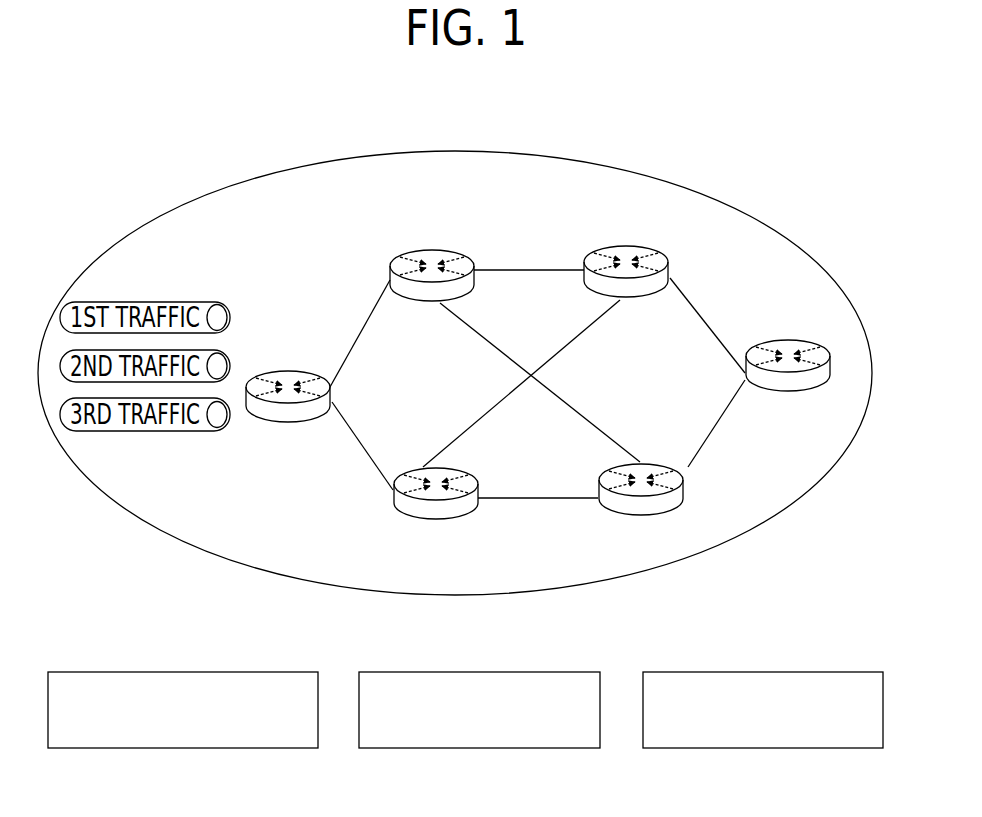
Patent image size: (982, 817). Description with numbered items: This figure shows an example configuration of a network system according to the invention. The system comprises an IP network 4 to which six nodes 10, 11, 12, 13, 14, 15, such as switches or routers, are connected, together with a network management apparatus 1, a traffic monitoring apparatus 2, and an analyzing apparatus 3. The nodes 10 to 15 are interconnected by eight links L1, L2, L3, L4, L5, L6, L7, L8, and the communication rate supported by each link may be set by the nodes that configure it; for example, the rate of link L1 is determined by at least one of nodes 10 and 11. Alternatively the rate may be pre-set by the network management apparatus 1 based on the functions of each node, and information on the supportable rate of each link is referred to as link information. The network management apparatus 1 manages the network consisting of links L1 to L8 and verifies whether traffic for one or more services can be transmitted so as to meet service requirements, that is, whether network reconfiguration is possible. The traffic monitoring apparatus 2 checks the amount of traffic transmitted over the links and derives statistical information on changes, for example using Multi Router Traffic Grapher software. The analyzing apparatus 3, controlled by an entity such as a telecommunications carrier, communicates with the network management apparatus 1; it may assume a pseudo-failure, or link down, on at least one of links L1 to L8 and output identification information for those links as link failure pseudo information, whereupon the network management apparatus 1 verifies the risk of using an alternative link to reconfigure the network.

The network management apparatus 1 is at (272, 672).
The traffic monitoring apparatus 2 is at (548, 672).
The analyzing apparatus 3 is at (831, 672).
The IP network 4 is at (700, 188).
The node 10 is at (300, 372).
The node 11 is at (458, 250).
The node 12 is at (652, 246).
The node 13 is at (468, 470).
The node 14 is at (677, 468).
The node 15 is at (817, 342).
The link L1 is at (373, 308).
The link L2 is at (362, 452).
The link L3 is at (525, 270).
The link L4 is at (500, 350).
The link L5 is at (550, 500).
The link L6 is at (560, 352).
The link L7 is at (705, 316).
The link L8 is at (724, 432).